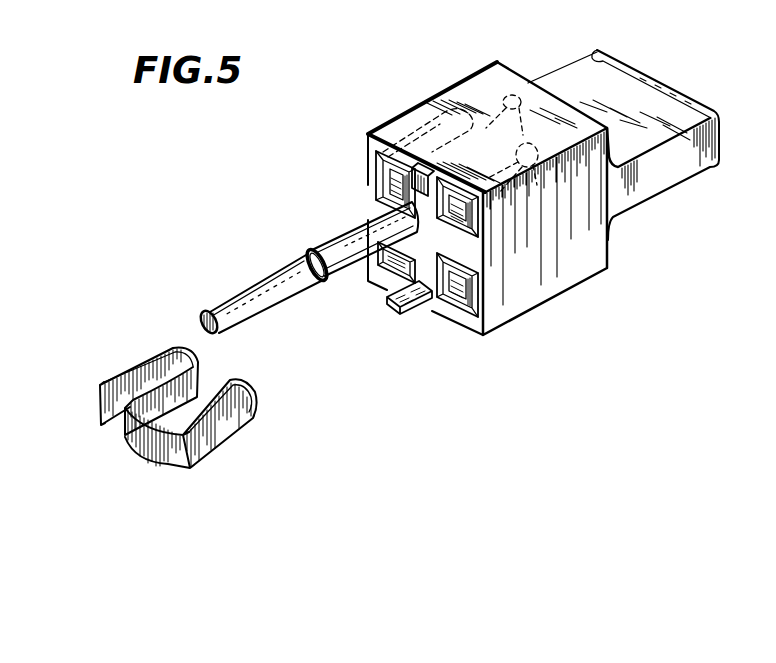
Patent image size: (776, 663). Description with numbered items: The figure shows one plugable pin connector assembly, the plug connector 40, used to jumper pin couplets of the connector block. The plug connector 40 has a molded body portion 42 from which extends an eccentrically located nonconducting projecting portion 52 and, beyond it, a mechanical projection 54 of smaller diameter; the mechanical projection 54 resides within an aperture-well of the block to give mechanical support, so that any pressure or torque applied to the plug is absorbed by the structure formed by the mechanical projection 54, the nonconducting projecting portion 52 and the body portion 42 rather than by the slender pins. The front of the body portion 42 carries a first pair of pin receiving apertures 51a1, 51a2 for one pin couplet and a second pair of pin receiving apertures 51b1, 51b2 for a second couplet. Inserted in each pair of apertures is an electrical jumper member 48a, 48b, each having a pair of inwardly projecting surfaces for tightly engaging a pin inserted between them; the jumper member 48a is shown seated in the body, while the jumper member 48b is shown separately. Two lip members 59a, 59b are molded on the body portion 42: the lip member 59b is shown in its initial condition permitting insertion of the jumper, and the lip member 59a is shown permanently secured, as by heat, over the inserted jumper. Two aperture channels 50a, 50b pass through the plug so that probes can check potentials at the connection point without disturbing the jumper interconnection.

The plug connector 40 is at (756, 190).
The body portion 42 is at (522, 298).
The electrical jumper member 48a is at (440, 118).
The electrical jumper member 48b is at (248, 440).
The aperture channel 50a is at (483, 165).
The aperture channel 50b is at (522, 190).
The pin receiving aperture 51a1 is at (375, 165).
The pin receiving aperture 51a2 is at (481, 251).
The pin receiving aperture 51b1 is at (377, 268).
The pin receiving aperture 51b2 is at (466, 316).
The nonconducting projecting portion 52 is at (347, 240).
The mechanical projection 54 is at (227, 300).
The lip member 59a is at (423, 166).
The lip member 59b is at (417, 312).